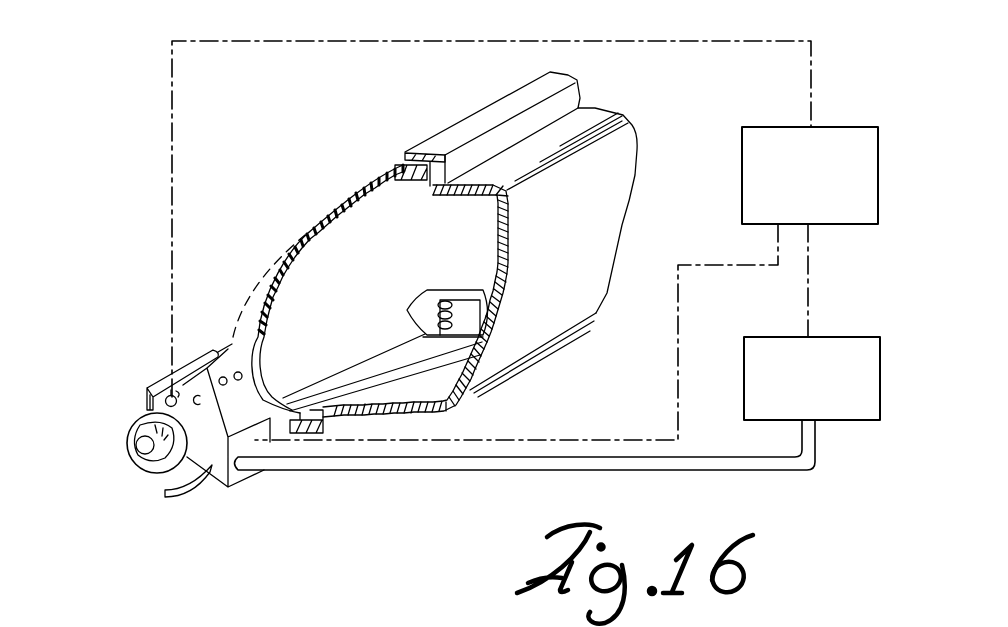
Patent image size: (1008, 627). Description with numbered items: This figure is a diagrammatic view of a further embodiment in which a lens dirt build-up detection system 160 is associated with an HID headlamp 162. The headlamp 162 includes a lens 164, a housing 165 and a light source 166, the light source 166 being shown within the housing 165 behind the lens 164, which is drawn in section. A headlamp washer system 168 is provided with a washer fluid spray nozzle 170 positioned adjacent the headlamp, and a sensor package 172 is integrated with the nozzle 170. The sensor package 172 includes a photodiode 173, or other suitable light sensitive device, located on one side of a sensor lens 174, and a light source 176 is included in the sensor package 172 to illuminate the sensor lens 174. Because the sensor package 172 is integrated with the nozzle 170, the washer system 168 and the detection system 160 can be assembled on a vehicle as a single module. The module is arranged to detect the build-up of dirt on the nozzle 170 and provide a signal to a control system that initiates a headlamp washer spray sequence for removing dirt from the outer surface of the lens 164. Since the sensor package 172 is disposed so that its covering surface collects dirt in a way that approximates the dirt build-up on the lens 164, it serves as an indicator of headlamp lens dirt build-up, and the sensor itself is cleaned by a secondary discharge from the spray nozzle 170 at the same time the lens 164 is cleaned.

The lens dirt build-up detection system 160 is at (712, 28).
The HID headlamp 162 is at (622, 214).
The lens 164 is at (360, 193).
The housing 165 is at (527, 353).
The light source 166 is at (447, 281).
The headlamp washer system 168 is at (412, 482).
The washer fluid spray nozzle 170 is at (221, 478).
The sensor package 172 is at (143, 486).
The photodiode 173 is at (166, 393).
The sensor lens 174 is at (140, 408).
The light source 176 is at (128, 441).